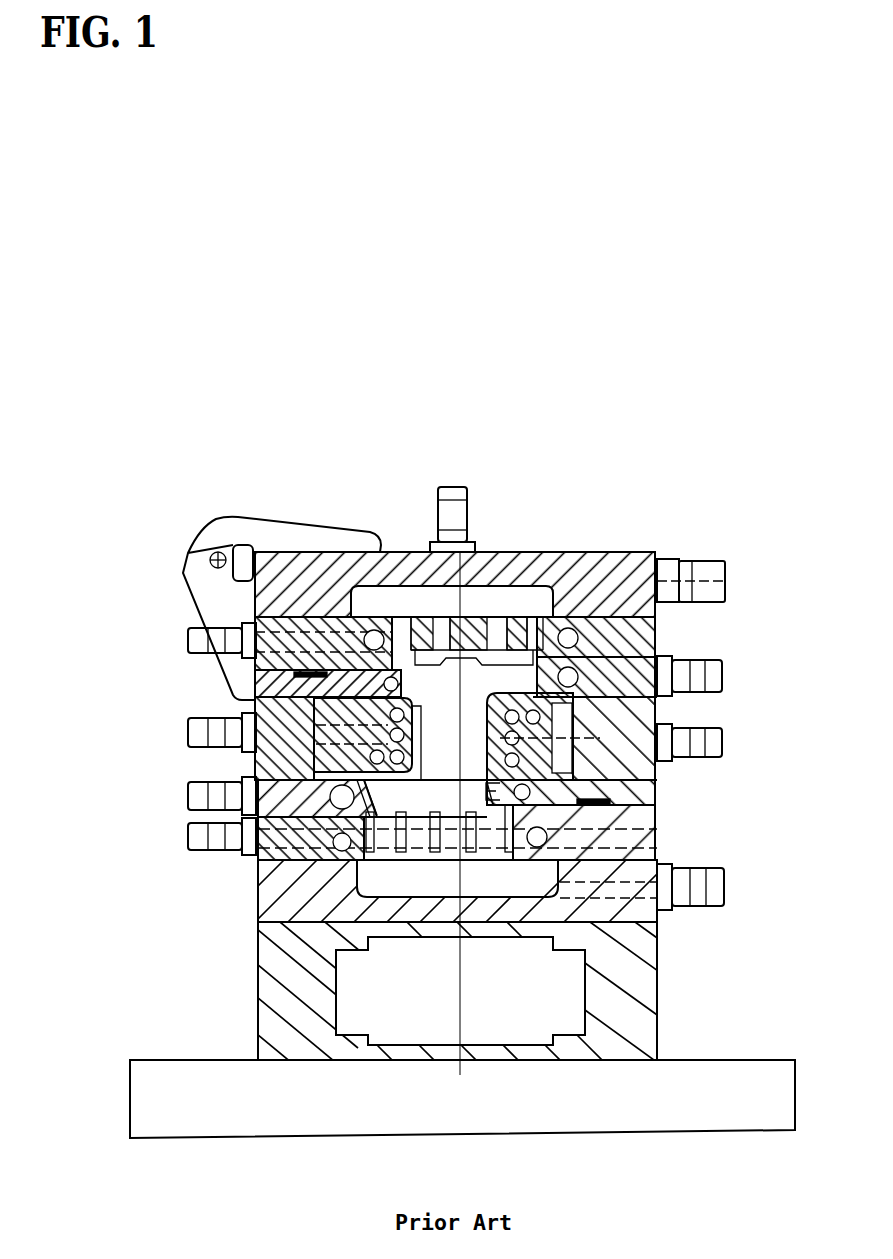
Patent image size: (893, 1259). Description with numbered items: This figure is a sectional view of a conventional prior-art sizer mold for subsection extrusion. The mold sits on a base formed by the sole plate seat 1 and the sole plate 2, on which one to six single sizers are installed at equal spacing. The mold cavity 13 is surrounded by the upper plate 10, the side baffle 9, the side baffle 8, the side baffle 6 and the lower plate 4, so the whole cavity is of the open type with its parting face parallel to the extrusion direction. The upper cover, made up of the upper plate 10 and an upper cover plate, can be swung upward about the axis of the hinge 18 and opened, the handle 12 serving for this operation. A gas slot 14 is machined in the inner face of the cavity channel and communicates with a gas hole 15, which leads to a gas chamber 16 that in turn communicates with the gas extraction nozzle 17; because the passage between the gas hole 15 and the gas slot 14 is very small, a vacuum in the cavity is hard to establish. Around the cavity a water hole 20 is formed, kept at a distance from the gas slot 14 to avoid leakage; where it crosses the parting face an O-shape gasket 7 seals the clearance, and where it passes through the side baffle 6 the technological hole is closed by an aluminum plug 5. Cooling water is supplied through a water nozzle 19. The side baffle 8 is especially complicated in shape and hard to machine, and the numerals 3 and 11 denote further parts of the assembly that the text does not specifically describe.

The sole plate seat 1 is at (470, 1074).
The sole plate 2 is at (534, 1008).
The spacer block 3 is at (534, 911).
The lower plate 4 is at (685, 892).
The aluminum plug 5 is at (534, 830).
The side baffle 6 is at (694, 823).
The O-shape gasket 7 is at (648, 795).
The side baffle 8 is at (647, 772).
The side baffle 9 is at (672, 718).
The upper plate 10 is at (533, 657).
The upper clamping plate 11 is at (522, 581).
The handle 12 is at (734, 580).
The mold cavity 13 is at (620, 530).
The gas slot 14 is at (565, 530).
The gas hole 15 is at (519, 530).
The gas chamber 16 is at (467, 512).
The gas extraction nozzle 17 is at (480, 481).
The hinge 18 is at (305, 556).
The water nozzle 19 is at (163, 839).
The water hole 20 is at (363, 855).